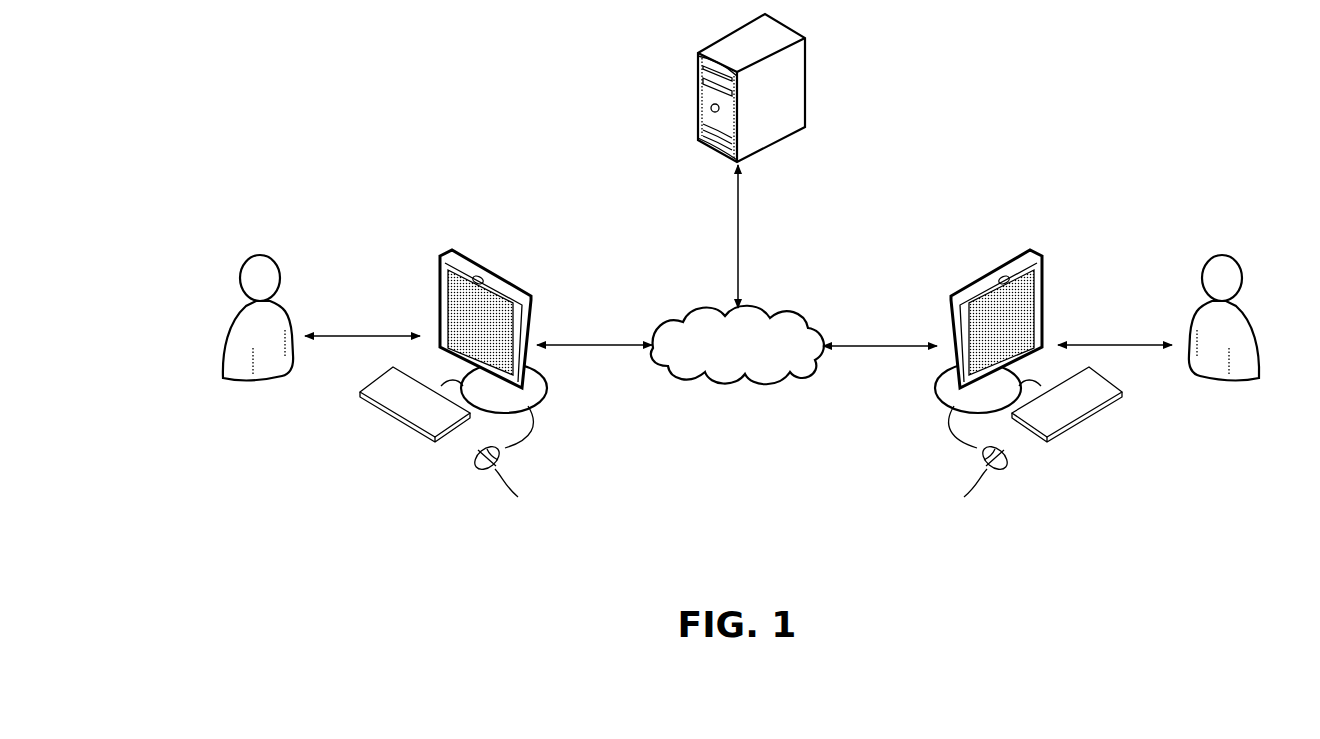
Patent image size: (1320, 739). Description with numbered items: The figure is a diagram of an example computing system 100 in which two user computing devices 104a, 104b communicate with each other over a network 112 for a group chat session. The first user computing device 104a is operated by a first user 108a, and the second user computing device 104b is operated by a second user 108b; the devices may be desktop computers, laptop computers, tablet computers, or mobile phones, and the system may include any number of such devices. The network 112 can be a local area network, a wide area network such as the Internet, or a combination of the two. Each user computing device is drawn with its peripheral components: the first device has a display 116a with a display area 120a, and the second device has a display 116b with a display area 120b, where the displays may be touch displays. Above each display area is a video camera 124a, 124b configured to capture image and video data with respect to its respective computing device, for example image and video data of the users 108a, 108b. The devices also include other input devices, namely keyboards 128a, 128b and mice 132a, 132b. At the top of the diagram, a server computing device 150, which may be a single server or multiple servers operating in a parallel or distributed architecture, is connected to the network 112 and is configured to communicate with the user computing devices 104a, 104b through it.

The computing system 100 is at (245, 56).
The user computing device 104a is at (485, 361).
The user computing device 104b is at (997, 361).
The user 108a is at (258, 254).
The user 108b is at (1224, 254).
The network 112 is at (738, 382).
The display 116a is at (489, 314).
The display 116b is at (992, 314).
The display area 120a is at (500, 315).
The display area 120b is at (982, 315).
The video camera 124a is at (480, 276).
The video camera 124b is at (1003, 276).
The keyboard 128a is at (392, 413).
The keyboard 128b is at (1090, 413).
The mouse 132a is at (570, 415).
The mouse 132b is at (912, 415).
The server computing device 150 is at (823, 150).